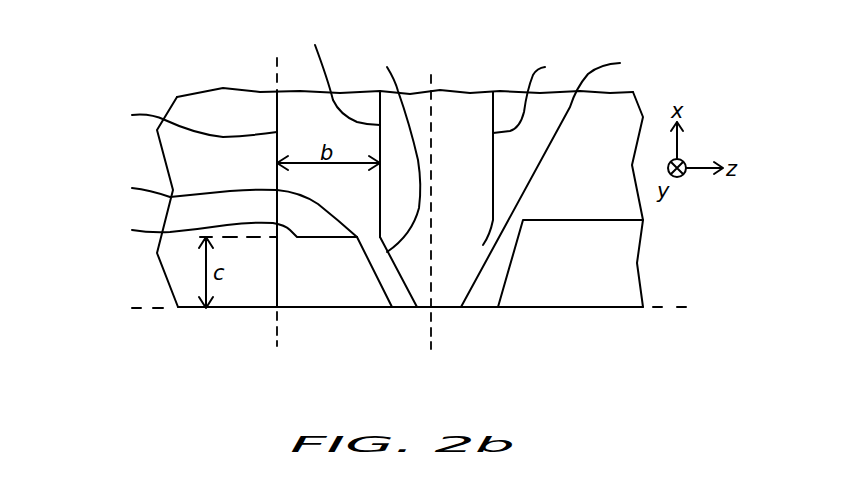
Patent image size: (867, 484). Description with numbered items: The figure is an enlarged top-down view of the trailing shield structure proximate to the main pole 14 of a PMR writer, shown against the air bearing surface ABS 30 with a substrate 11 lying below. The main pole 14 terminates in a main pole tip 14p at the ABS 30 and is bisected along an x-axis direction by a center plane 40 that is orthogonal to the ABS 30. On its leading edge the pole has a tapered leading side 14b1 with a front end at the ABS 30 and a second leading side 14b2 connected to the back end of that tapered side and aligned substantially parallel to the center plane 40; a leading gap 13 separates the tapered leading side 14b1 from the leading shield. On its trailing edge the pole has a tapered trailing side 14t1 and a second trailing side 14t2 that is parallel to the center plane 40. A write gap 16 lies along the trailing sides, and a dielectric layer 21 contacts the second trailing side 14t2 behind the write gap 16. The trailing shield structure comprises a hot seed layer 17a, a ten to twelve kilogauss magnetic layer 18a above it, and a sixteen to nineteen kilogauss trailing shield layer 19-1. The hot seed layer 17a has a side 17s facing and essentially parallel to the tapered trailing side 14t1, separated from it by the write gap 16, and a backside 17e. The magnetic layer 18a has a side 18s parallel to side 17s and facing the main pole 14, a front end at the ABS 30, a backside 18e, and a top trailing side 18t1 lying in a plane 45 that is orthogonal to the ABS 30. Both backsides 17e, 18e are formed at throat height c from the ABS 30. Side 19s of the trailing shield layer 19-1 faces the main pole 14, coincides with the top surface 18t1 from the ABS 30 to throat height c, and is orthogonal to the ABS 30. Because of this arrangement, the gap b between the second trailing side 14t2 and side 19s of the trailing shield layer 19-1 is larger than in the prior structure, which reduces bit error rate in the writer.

The substrate 11 is at (620, 260).
The leading gap 13 is at (487, 298).
The main pole 14 is at (477, 115).
The tapered leading side 14b1 is at (567, 180).
The second leading side 14b2 is at (535, 90).
The tapered trailing side 14t1 is at (389, 150).
The second trailing side 14t2 is at (341, 74).
The main pole tip 14p is at (443, 308).
The write gap 16 is at (401, 298).
The hot seed layer 17a is at (373, 300).
The backside of hot seed layer 17e is at (224, 207).
The hot seed layer side 17s is at (387, 252).
The 10-12 kG magnetic layer 18a is at (290, 273).
The backside of 10-12 kG magnetic layer 18e is at (224, 229).
The side of 10-12 kG magnetic layer 18s is at (355, 240).
The top (trailing) side of 10-12 kG magnetic layer 18t1 is at (277, 253).
The 16-19 kG trailing shield layer 19-1 is at (179, 146).
The side of trailing shield layer 19s is at (183, 120).
The dielectric layer 21 is at (358, 107).
The ABS 30 is at (412, 310).
The center plane 40 is at (432, 215).
The plane 45 is at (276, 201).